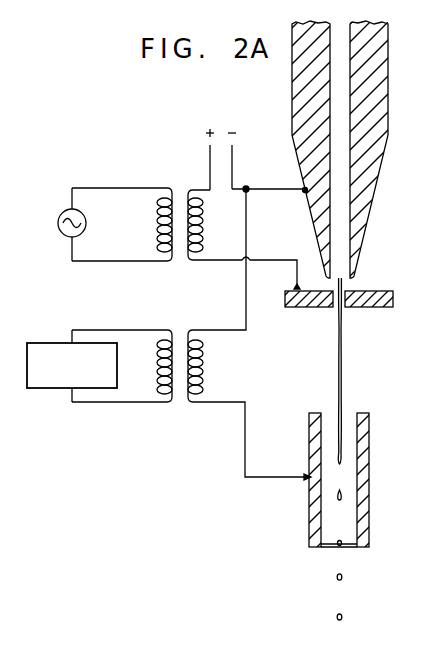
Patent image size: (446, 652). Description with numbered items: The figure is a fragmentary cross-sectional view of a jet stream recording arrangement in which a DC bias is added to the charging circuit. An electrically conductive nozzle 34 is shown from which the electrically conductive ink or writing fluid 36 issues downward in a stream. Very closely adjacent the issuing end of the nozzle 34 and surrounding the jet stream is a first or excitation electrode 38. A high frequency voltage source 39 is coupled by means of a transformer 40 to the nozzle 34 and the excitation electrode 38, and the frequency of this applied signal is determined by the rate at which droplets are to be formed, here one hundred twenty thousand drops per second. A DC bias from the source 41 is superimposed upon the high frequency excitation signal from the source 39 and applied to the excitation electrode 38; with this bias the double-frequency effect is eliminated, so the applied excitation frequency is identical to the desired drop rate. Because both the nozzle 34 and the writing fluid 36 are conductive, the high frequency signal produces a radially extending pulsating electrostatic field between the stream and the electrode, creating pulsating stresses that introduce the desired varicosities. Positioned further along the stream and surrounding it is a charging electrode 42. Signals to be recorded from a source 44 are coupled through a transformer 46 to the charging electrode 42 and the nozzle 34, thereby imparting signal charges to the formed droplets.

The nozzle 34 is at (300, 79).
The writing fluid 36 is at (343, 358).
The excitation electrode 38 is at (373, 290).
The high frequency voltage source 39 is at (62, 213).
The transformer 40 is at (180, 177).
The DC bias source 41 is at (221, 124).
The charging electrode 42 is at (361, 475).
The signal source 44 is at (60, 343).
The transformer 46 is at (177, 412).